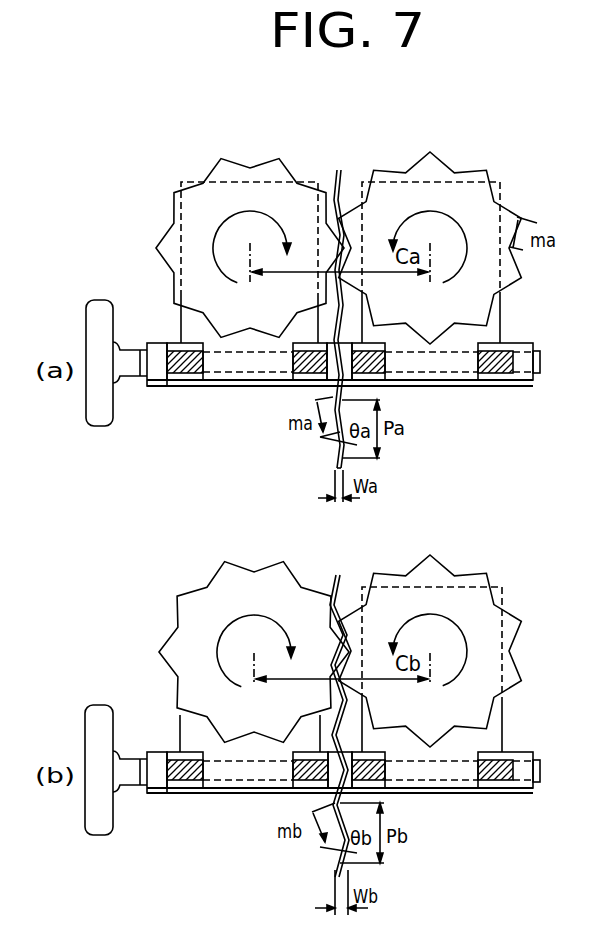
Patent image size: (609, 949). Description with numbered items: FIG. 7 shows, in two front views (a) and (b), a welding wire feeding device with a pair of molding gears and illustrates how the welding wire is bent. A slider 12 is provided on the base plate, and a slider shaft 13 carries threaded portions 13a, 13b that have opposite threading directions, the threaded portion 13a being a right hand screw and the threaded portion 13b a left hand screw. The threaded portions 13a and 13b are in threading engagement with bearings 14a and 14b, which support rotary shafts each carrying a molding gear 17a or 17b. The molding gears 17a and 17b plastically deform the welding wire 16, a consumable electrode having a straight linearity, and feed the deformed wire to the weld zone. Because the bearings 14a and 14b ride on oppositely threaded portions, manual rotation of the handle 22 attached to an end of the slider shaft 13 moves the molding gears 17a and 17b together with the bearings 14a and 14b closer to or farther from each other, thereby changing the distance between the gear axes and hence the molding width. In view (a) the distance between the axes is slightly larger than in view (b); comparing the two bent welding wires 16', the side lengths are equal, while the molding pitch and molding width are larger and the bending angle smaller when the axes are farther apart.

The slider 12 is at (520, 345).
The slider shaft 13 is at (198, 374).
The threaded portion 13a is at (495, 376).
The threaded portion 13b is at (178, 376).
The bearing 14a is at (495, 318).
The bearing 14b is at (187, 325).
The welding wire 16 is at (337, 505).
The bent welding wire 16' is at (301, 638).
The molding gear 17a is at (440, 165).
The molding gear 17b is at (268, 165).
The handle 22 is at (97, 300).